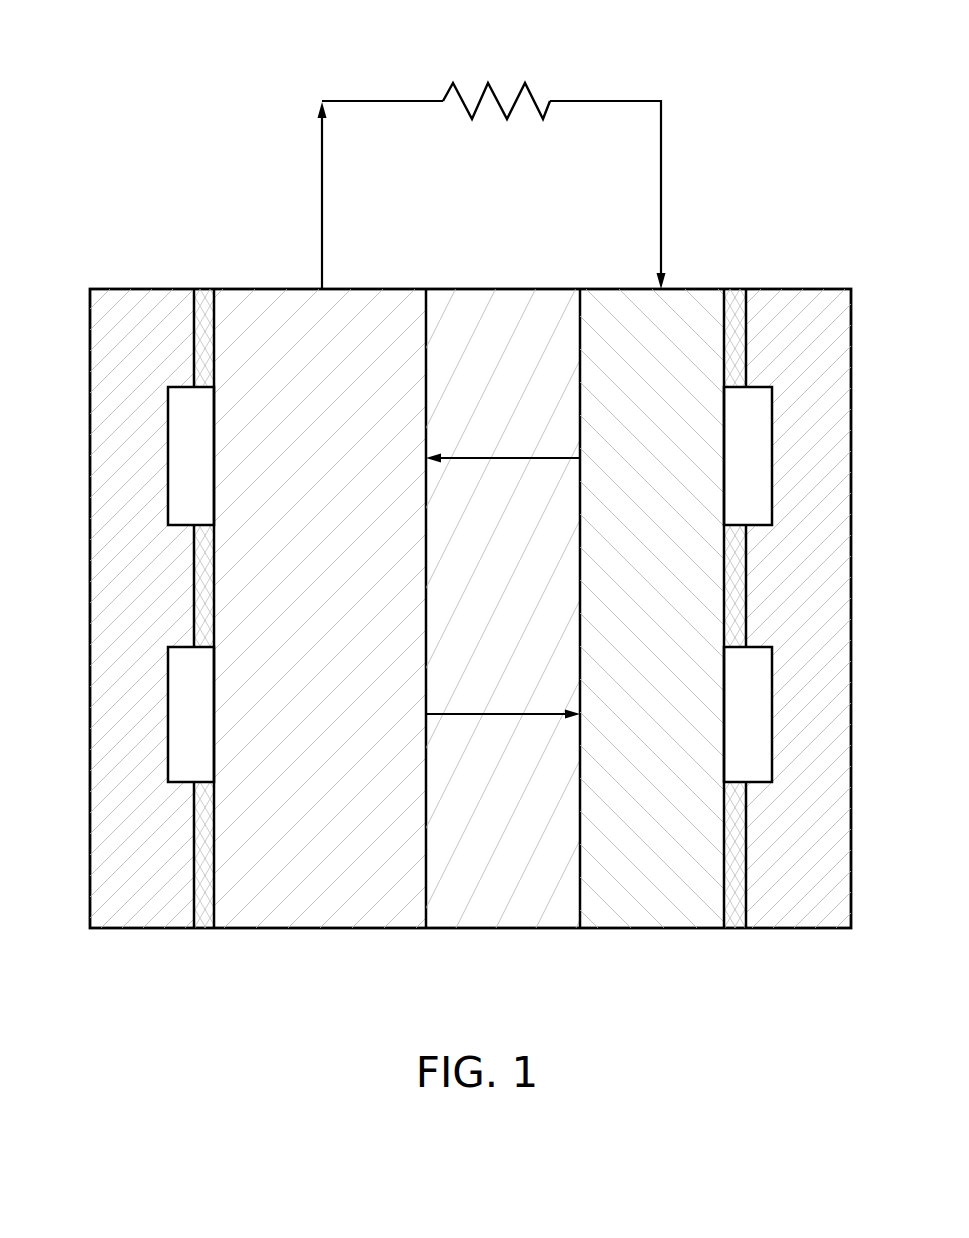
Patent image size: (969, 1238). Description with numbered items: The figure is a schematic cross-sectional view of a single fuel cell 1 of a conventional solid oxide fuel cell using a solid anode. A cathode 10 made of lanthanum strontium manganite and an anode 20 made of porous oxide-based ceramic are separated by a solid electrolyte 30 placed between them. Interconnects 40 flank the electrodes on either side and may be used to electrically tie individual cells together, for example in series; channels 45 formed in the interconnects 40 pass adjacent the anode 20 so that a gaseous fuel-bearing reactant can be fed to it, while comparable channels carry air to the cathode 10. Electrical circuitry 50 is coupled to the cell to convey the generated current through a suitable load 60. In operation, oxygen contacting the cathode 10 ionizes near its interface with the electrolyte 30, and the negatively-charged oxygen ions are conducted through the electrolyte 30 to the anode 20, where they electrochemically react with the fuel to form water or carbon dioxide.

The fuel cell 1 is at (106, 96).
The cathode 10 is at (647, 918).
The anode 20 is at (310, 918).
The solid electrolyte 30 is at (503, 918).
The interconnect 40 is at (103, 575).
The channel 45 is at (178, 457).
The electrical circuitry 50 is at (625, 101).
The load 60 is at (528, 90).